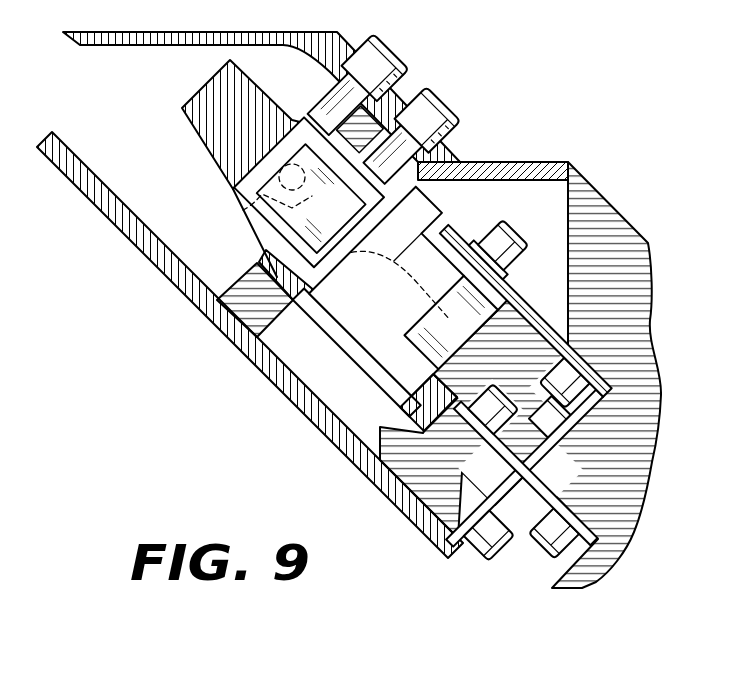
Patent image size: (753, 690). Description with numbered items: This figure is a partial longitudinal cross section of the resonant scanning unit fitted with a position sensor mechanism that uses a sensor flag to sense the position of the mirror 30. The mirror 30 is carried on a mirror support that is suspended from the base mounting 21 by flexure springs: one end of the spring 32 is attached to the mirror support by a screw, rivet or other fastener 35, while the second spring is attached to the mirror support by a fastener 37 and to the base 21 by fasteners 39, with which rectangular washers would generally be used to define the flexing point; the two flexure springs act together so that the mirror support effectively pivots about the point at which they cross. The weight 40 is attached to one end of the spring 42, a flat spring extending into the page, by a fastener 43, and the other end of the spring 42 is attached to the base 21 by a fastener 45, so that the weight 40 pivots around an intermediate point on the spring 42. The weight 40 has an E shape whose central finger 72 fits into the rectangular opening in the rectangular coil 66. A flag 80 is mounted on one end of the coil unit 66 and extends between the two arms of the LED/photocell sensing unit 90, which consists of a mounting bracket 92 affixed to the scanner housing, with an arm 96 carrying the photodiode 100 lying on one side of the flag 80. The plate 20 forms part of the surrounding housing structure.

The mounting plate 20 is at (487, 162).
The base mounting 21 is at (643, 300).
The mirror 30 is at (372, 508).
The spring 32 is at (510, 490).
The fastener 35 is at (468, 550).
The fastener 37 is at (490, 400).
The fasteners 39 is at (545, 548).
The weight 40 is at (220, 136).
The spring 42 is at (521, 310).
The fastener 43 is at (500, 240).
The fastener 45 is at (540, 372).
The rectangular coil 66 is at (449, 377).
The central finger 72 is at (397, 316).
The flag 80 is at (280, 228).
The LED/photocell sensing unit 90 is at (324, 84).
The mounting bracket 92 is at (385, 108).
The arm 96 is at (308, 124).
The photodiode 100 is at (243, 210).